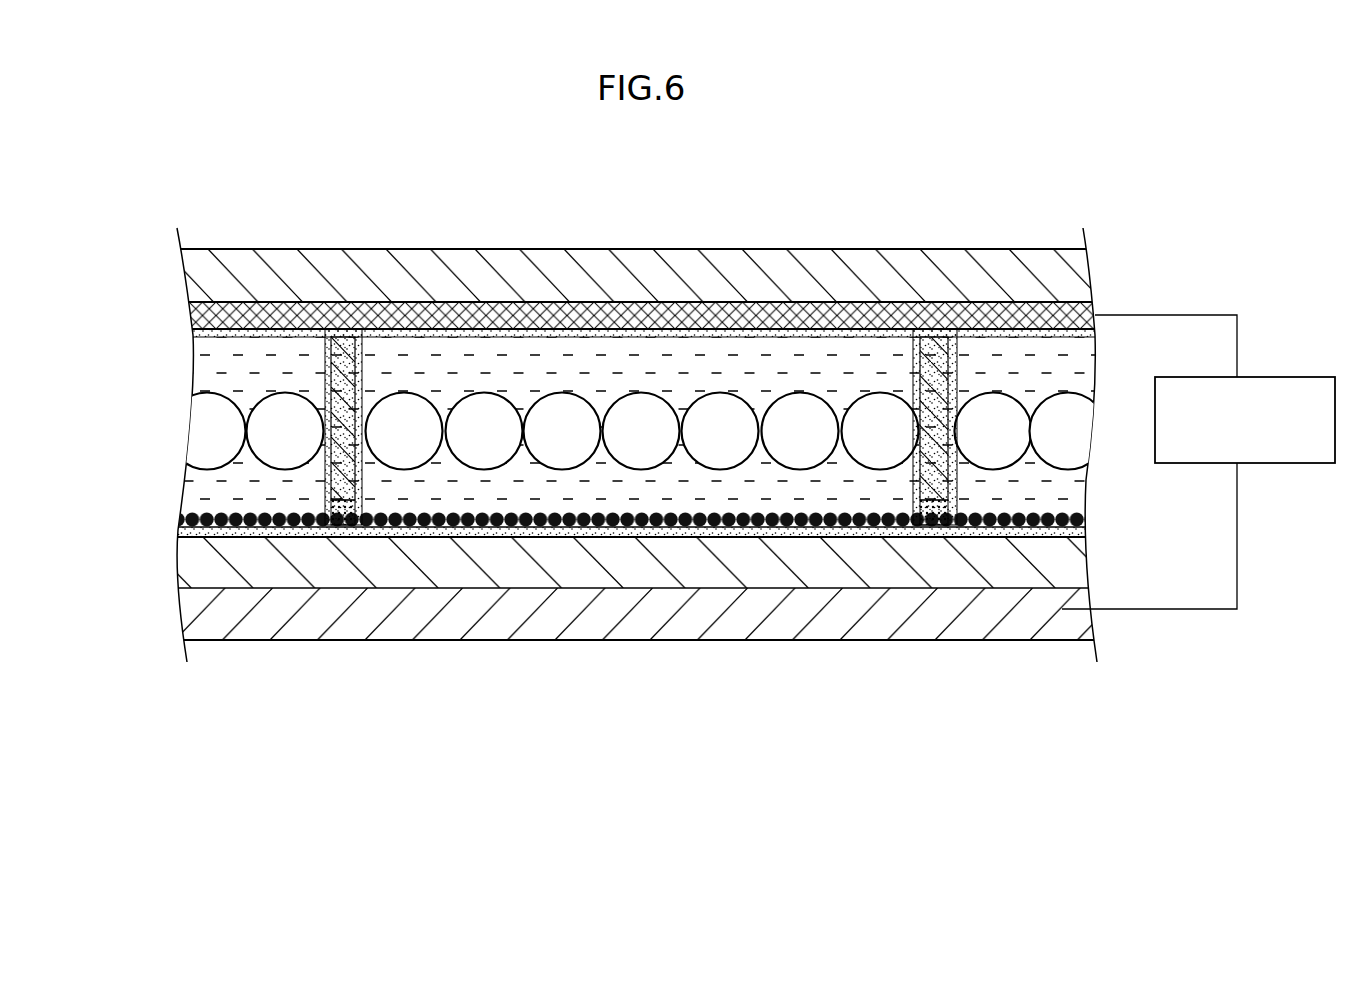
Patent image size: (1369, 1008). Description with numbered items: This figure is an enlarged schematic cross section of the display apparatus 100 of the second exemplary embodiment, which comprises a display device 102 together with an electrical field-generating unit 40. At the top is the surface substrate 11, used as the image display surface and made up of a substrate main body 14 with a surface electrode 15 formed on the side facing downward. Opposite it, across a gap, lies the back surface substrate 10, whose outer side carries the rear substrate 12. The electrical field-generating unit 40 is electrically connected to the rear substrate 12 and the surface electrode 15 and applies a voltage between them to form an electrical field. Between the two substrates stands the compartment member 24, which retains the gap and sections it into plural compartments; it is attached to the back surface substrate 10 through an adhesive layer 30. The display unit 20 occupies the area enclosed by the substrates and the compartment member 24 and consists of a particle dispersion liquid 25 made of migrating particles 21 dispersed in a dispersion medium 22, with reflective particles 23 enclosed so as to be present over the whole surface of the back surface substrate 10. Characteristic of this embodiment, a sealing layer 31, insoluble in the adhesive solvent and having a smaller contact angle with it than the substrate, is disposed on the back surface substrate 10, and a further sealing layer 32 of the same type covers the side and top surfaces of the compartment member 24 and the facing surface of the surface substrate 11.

The display apparatus 100 is at (1201, 220).
The display device 102 is at (968, 165).
The surface substrate 11 is at (1161, 243).
The substrate main body 14 is at (1065, 282).
The surface electrode 15 is at (1075, 313).
The sealing layer 32 is at (1092, 334).
The display unit 20 is at (254, 654).
The particle dispersion liquid 25 is at (131, 457).
The dispersion medium 22 is at (375, 483).
The compartment member 24 is at (340, 362).
The reflective particles 23 is at (397, 468).
The migrating particles 21 is at (220, 515).
The sealing layer 31 is at (1085, 530).
The back surface substrate 10 is at (1068, 565).
The rear substrate 12 is at (1087, 620).
The adhesive layer 30 is at (348, 525).
The electrical field-generating unit 40 is at (1263, 377).